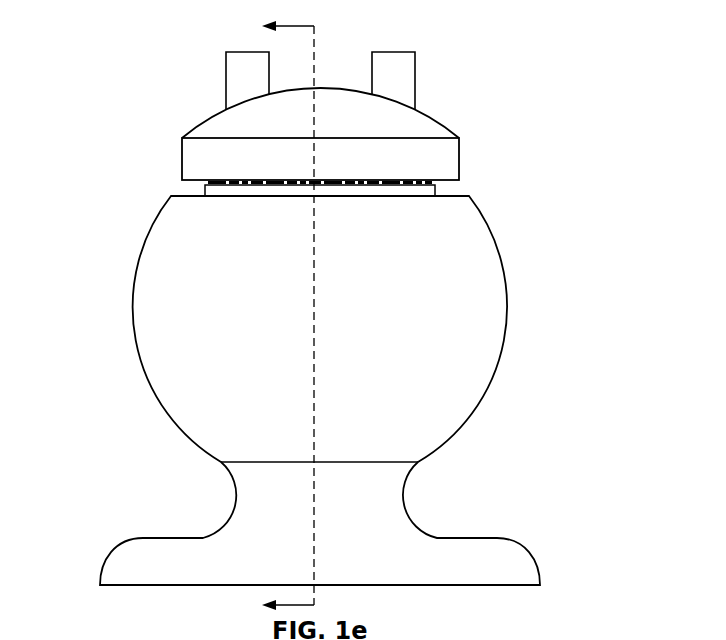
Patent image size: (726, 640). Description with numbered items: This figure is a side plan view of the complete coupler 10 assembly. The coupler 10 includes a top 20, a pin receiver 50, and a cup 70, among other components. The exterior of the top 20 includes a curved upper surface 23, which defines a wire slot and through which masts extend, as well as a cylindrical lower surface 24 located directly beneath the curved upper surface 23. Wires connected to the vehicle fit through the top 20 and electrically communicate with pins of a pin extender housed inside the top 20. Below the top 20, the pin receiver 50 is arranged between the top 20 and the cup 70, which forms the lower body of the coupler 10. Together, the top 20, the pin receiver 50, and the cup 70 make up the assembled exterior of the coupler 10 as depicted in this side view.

The coupler 10 is at (112, 95).
The top 20 is at (443, 116).
The curved upper surface 23 is at (328, 88).
The cylindrical lower surface 24 is at (182, 158).
The pin receiver 50 is at (446, 188).
The cup 70 is at (508, 355).